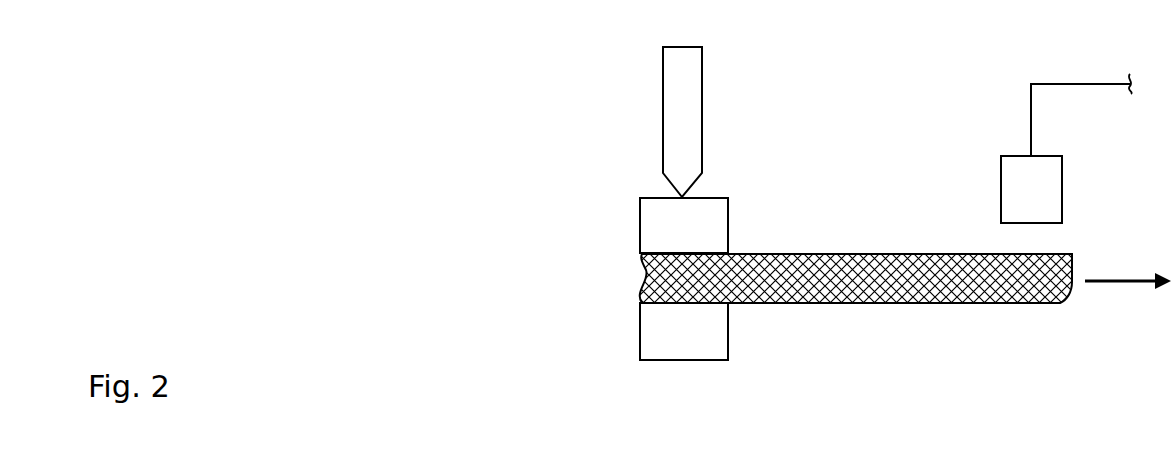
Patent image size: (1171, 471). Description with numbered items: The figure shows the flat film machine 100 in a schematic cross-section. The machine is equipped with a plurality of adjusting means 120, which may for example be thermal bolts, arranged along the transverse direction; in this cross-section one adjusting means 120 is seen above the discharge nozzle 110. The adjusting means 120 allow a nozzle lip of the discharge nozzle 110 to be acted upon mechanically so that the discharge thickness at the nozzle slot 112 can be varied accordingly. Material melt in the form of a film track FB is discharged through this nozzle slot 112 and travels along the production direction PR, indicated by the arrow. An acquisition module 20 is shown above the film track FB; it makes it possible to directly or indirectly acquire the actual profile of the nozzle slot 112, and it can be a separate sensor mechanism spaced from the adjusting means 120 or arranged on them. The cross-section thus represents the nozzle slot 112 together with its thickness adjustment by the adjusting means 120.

The flat film machine 100 is at (412, 221).
The adjusting means 120 is at (673, 111).
The discharge nozzle 110 is at (720, 327).
The nozzle slot 112 is at (748, 249).
The acquisition module 20 is at (1052, 193).
The film track FB is at (982, 305).
The production direction PR is at (1128, 271).